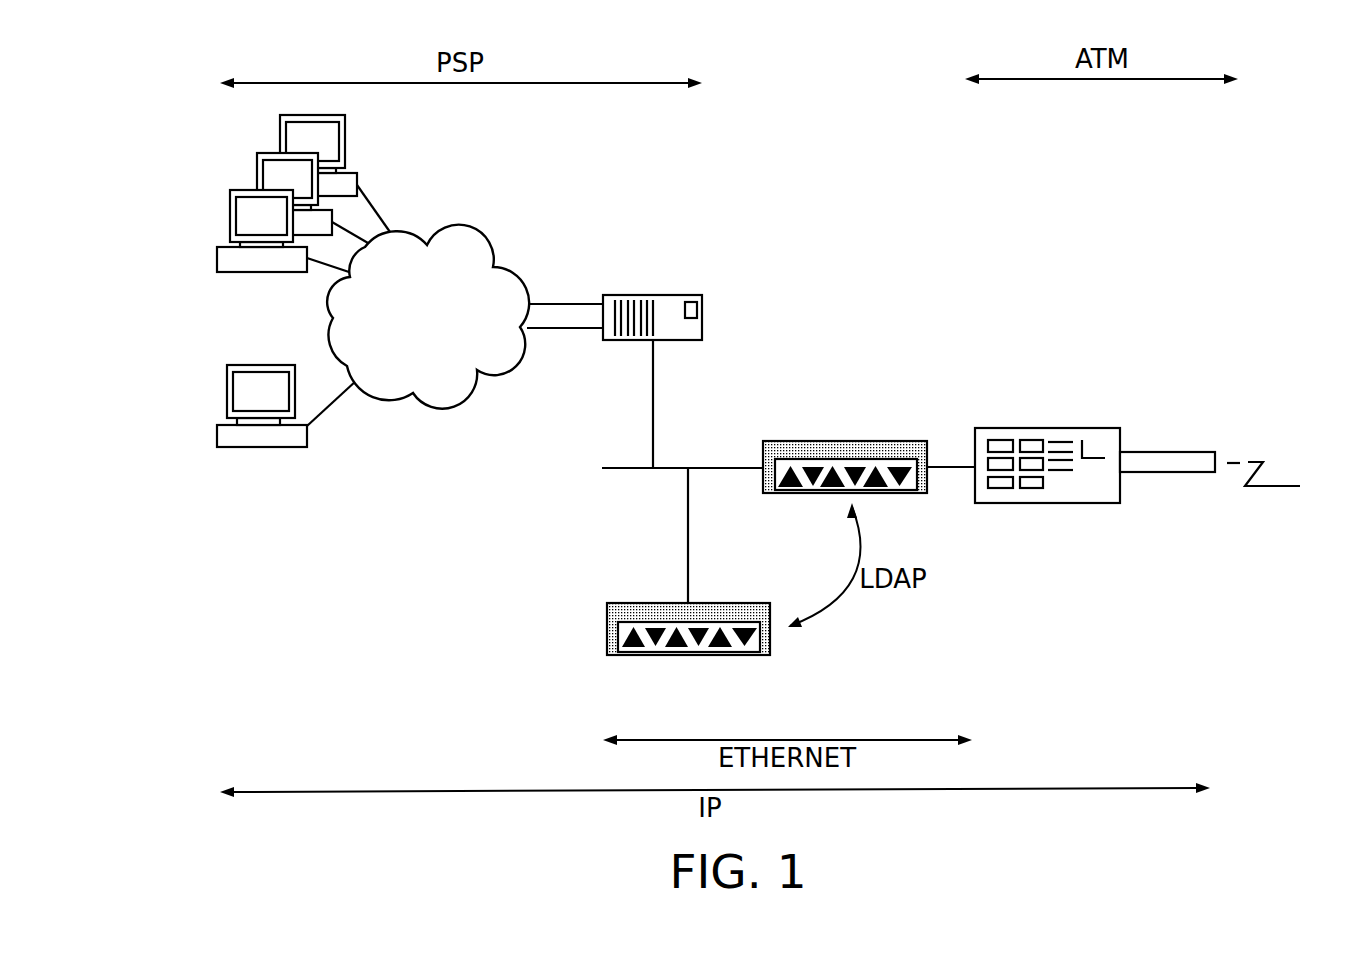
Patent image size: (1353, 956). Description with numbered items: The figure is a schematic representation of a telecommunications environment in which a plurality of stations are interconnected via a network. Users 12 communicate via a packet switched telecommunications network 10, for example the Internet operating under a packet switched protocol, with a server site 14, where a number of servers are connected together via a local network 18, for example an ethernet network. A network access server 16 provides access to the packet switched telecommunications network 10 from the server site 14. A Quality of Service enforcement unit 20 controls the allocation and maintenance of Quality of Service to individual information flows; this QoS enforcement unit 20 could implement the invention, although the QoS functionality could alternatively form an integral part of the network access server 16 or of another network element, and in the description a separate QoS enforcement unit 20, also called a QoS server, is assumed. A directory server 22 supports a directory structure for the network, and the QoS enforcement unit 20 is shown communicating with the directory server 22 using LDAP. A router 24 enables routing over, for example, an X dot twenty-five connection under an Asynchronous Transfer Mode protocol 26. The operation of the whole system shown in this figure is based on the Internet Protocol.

The packet switched telecommunications network 10 is at (478, 236).
The users 12 is at (281, 137).
The server site 14 is at (880, 265).
The network access server 16 is at (634, 294).
The local network 18 is at (622, 470).
The QoS enforcement unit 20 is at (793, 497).
The directory server 22 is at (607, 613).
The router 24 is at (1093, 427).
The Asynchronous Transfer Mode protocol 26 is at (1237, 462).